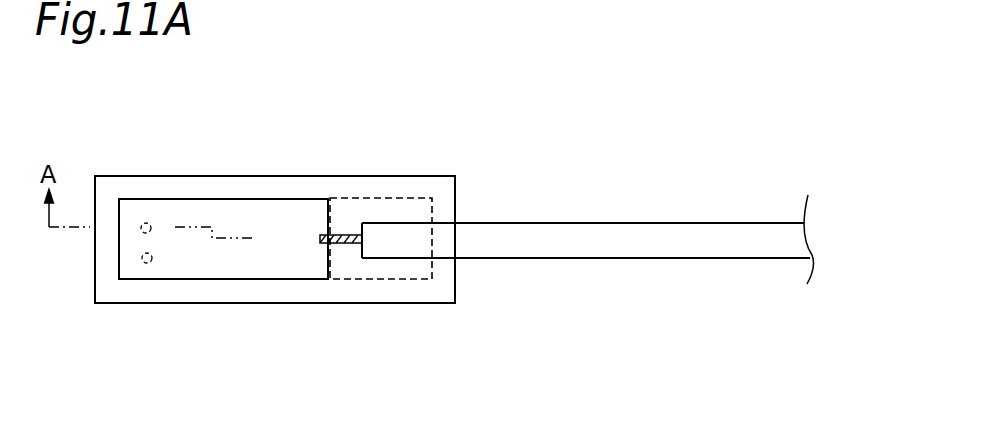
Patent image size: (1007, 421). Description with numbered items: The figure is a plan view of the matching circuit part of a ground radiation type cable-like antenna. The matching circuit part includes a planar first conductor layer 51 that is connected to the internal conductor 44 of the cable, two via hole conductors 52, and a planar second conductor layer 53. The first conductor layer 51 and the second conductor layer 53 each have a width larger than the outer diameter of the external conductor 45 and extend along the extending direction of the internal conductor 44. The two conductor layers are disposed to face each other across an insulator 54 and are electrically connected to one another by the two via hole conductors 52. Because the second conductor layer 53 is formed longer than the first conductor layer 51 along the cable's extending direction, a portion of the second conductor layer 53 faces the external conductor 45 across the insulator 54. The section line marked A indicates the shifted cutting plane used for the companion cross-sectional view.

The internal conductor 44 is at (343, 244).
The external conductor 45 is at (727, 230).
The first conductor layer 51 is at (244, 209).
The via hole conductors 52 is at (143, 232).
The second conductor layer 53 is at (397, 279).
The insulator 54 is at (374, 182).